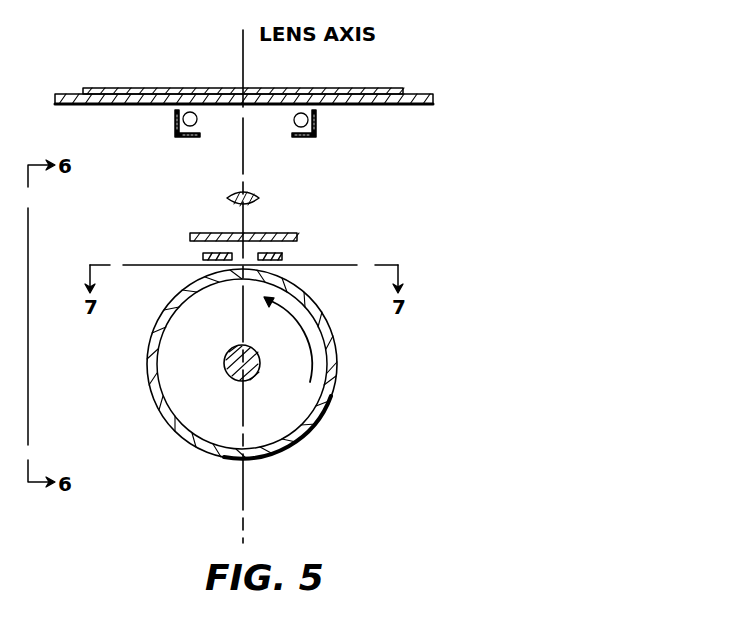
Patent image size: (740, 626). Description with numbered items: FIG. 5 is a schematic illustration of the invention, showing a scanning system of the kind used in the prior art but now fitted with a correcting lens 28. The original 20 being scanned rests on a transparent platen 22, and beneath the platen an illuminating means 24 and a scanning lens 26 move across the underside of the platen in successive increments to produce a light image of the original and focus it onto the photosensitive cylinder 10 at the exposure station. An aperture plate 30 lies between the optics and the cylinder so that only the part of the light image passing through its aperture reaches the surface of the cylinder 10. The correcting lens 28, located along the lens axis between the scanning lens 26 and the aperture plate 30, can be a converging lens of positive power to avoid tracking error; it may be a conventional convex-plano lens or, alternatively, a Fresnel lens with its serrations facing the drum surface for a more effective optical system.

The photosensitive cylinder 10 is at (341, 356).
The original 20 is at (377, 88).
The transparent platen 22 is at (430, 95).
The illuminating means 24 is at (314, 139).
The scanning lens 26 is at (223, 196).
The correcting lens 28 is at (284, 233).
The aperture plate 30 is at (257, 261).